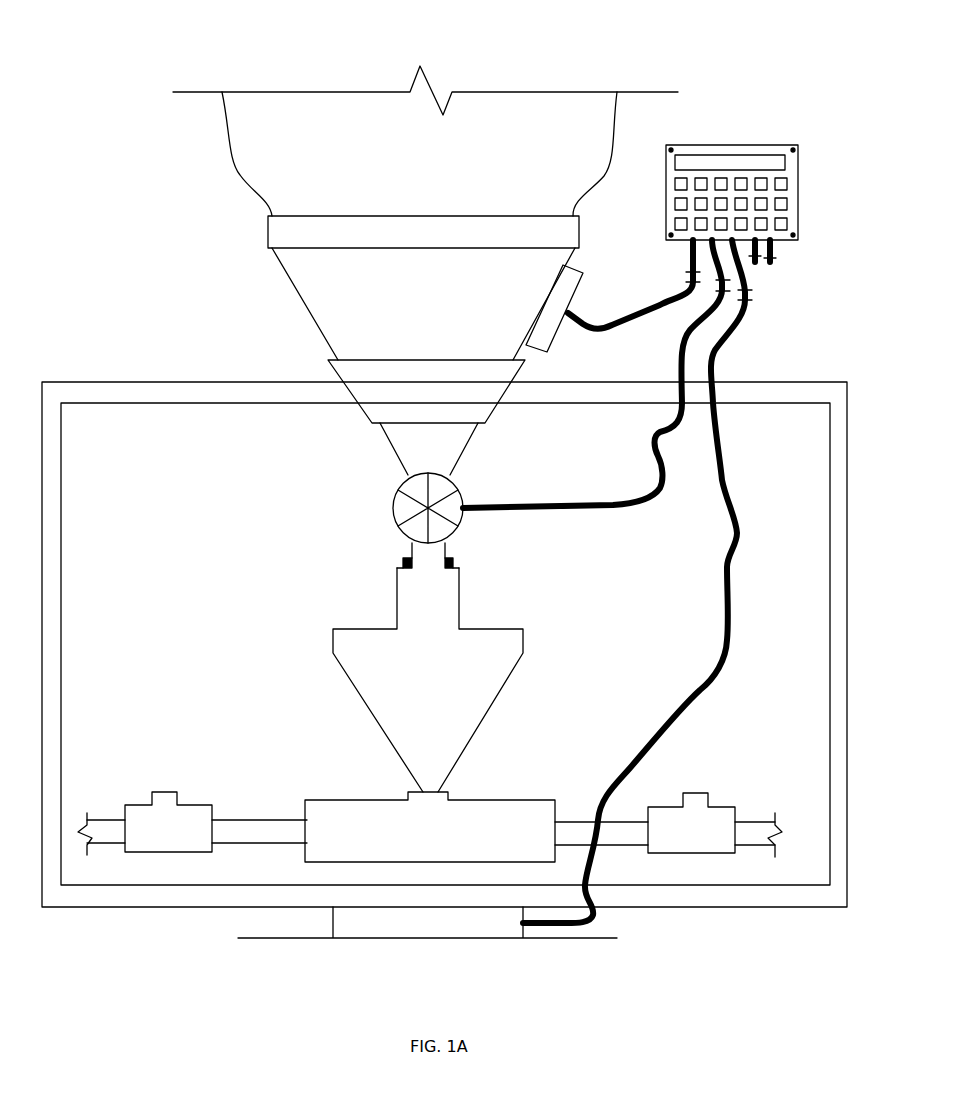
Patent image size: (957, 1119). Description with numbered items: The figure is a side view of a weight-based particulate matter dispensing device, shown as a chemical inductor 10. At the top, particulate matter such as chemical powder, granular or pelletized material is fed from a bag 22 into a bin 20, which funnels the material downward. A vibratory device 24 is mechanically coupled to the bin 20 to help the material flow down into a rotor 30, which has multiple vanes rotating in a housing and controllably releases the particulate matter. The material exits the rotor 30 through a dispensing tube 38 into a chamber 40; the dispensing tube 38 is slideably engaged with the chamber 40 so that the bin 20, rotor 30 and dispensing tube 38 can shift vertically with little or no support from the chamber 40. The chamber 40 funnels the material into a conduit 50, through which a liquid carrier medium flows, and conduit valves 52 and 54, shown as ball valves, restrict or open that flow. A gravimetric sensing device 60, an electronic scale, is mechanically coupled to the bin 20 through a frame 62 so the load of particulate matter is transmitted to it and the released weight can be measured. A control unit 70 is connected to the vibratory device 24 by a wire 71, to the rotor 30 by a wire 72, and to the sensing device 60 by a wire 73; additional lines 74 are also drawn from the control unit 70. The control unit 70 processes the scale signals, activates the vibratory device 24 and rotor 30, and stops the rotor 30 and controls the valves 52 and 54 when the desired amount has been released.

The chemical inductor 10 is at (142, 61).
The bag 22 is at (268, 160).
The bin 20 is at (350, 312).
The vibratory device 24 is at (572, 288).
The rotor 30 is at (392, 512).
The dispensing tube 38 is at (428, 552).
The chamber 40 is at (358, 694).
The conduit 50 is at (345, 801).
The conduit valve 52 is at (147, 822).
The conduit valve 54 is at (718, 820).
The gravimetric sensing device 60 is at (333, 925).
The frame 62 is at (150, 393).
The control unit 70 is at (755, 146).
The wire 71 is at (616, 322).
The wire 72 is at (657, 466).
The wire 73 is at (725, 641).
The auxiliary lines 74 is at (762, 260).